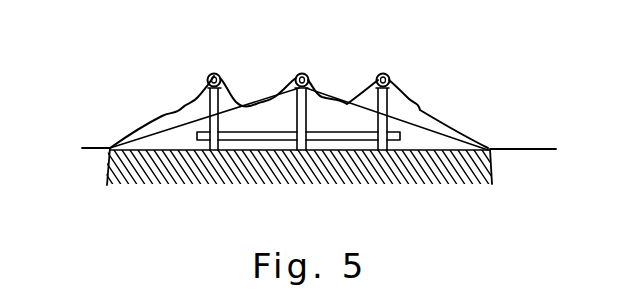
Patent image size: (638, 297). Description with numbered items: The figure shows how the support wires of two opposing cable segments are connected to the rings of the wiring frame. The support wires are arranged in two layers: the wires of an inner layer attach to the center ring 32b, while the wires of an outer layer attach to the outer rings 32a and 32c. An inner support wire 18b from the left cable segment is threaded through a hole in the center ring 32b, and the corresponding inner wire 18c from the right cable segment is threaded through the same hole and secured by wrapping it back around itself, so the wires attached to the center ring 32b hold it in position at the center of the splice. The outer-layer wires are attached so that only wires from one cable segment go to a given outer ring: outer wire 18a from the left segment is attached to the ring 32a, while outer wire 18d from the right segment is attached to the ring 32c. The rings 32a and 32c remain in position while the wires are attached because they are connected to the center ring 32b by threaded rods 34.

The support wire 18a is at (153, 120).
The support wire 18b is at (240, 104).
The support wire 18c is at (357, 98).
The support wire 18d is at (447, 125).
The ring 32a is at (222, 87).
The center ring 32b is at (291, 118).
The ring 32c is at (372, 88).
The threaded rod 34 is at (342, 131).